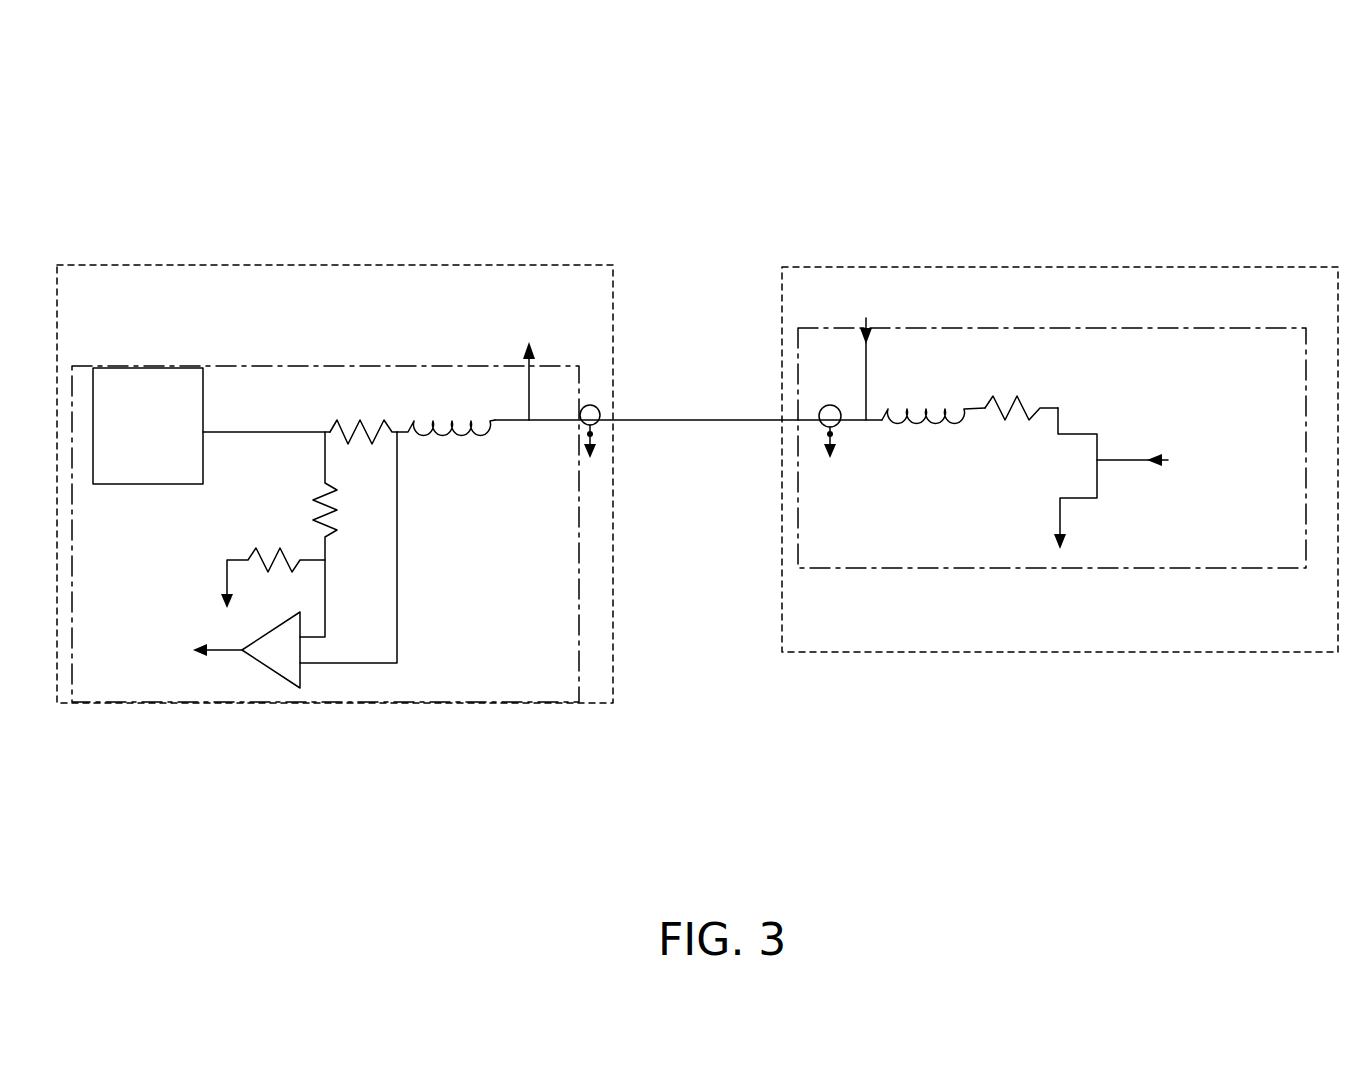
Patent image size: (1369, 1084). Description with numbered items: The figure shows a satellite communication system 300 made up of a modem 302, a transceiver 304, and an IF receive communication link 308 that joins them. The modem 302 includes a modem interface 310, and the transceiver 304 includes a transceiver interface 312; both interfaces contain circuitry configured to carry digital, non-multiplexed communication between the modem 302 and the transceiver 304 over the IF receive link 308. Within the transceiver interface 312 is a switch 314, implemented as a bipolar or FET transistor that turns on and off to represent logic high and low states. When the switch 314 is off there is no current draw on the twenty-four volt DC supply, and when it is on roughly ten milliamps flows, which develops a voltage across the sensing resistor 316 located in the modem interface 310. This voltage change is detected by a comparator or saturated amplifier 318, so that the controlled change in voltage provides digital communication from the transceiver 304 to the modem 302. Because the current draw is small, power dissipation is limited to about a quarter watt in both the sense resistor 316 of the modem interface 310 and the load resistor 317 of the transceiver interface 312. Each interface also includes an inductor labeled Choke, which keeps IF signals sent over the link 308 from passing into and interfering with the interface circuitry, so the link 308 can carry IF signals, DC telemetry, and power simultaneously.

The satellite communication system 300 is at (738, 104).
The modem 302 is at (334, 210).
The transceiver 304 is at (1004, 227).
The IF receive communication link 308 is at (686, 372).
The modem interface 310 is at (579, 660).
The transceiver interface 312 is at (797, 548).
The switch 314 is at (1015, 518).
The sensing resistor 316 is at (360, 458).
The load resistor 317 is at (1050, 400).
The comparator 318 is at (288, 715).